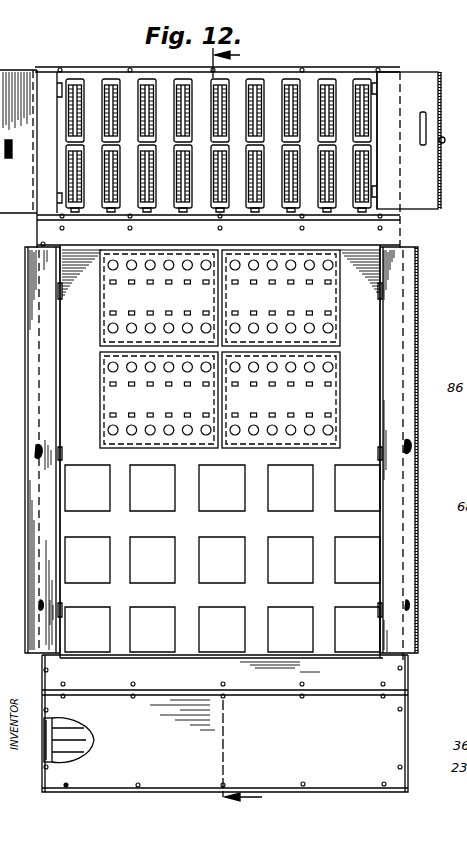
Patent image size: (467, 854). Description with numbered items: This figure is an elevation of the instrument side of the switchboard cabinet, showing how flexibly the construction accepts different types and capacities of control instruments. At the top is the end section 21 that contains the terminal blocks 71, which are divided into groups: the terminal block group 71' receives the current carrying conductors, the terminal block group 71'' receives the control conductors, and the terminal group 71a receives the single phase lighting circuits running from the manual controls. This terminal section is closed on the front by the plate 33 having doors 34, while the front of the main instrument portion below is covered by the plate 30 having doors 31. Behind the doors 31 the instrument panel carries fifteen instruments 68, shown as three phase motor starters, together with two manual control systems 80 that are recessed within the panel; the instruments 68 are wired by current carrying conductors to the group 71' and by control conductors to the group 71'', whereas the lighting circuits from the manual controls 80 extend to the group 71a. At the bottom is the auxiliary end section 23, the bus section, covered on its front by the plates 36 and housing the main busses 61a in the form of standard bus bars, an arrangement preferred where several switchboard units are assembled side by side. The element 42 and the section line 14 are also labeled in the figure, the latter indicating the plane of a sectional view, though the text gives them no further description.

The end panel 42 is at (36, 69).
The plate 33 is at (37, 222).
The end section 21 is at (268, 88).
The terminal block group 71' is at (93, 129).
The terminal block group 71'' is at (154, 130).
The terminal group 71a is at (324, 72).
The terminal blocks 71 is at (443, 131).
The doors 34 is at (440, 112).
The plate 30 is at (37, 243).
The doors 31 is at (28, 318).
The manual control system 80 is at (331, 394).
The instruments 68 is at (367, 488).
The plates 36 is at (398, 736).
The auxiliary end section 23 is at (271, 747).
The main busses 61a is at (88, 756).
The section line 14 is at (196, 799).